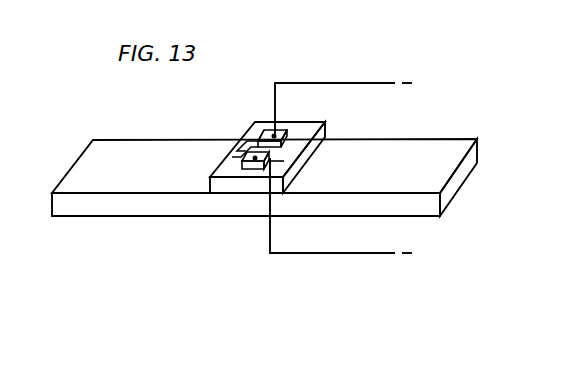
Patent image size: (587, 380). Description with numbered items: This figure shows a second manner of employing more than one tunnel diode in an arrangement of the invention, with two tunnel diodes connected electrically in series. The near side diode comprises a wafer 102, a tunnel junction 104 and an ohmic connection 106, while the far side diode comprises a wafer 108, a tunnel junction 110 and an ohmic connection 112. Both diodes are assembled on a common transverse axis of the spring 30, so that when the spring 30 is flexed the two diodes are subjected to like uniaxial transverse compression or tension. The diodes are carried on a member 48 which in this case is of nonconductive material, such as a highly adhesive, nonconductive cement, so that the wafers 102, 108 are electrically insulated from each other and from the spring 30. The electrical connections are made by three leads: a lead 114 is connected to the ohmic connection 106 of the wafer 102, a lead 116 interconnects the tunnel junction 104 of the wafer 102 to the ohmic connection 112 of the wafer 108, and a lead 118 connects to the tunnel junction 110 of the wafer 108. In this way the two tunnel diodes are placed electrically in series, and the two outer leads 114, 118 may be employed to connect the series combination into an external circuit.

The spring 30 is at (108, 207).
The member 48 is at (327, 128).
The wafer 102 is at (232, 157).
The tunnel junction 104 is at (255, 161).
The ohmic connection 106 is at (284, 161).
The wafer 108 is at (276, 136).
The tunnel junction 110 is at (277, 133).
The ohmic connection 112 is at (263, 137).
The lead 114 is at (364, 254).
The lead 116 is at (237, 151).
The lead 118 is at (337, 83).